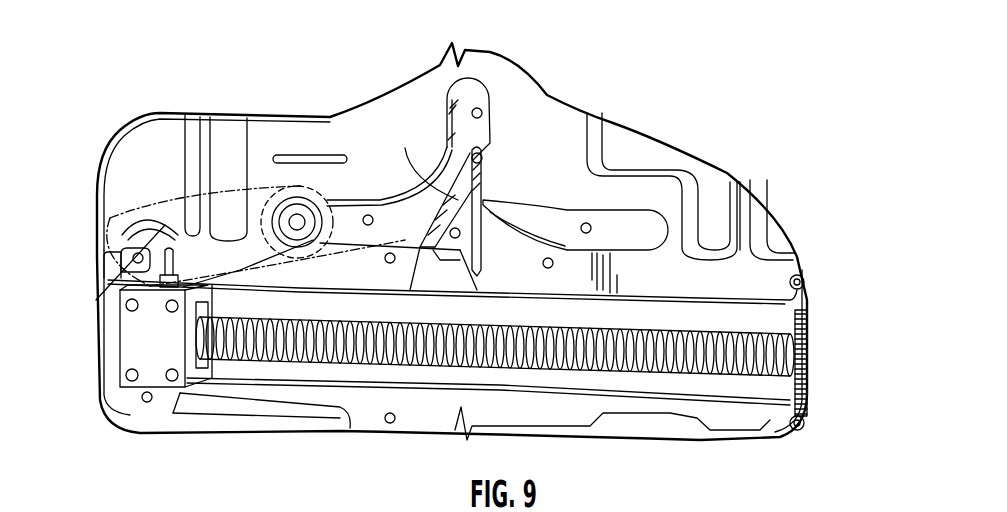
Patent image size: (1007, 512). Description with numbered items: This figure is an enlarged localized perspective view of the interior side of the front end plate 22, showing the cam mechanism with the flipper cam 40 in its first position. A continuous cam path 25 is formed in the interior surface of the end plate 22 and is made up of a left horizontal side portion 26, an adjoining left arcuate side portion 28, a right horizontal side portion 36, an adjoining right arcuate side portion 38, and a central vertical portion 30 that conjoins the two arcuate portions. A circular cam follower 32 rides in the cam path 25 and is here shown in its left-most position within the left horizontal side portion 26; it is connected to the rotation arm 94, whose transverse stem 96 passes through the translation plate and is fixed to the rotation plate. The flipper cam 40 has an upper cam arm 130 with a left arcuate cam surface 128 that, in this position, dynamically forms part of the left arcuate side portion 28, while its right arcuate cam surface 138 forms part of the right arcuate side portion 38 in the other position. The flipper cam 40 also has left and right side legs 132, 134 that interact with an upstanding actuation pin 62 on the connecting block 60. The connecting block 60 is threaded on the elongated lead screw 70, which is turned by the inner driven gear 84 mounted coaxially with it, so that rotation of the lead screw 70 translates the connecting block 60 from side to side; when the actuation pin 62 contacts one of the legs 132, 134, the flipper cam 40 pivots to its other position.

The front end plate 22 is at (760, 200).
The cam path 25 is at (439, 108).
The left horizontal side portion 26 is at (345, 228).
The left arcuate side portion 28 is at (402, 230).
The central vertical portion 30 is at (470, 93).
The cam follower 32 is at (290, 215).
The right horizontal side portion 36 is at (630, 225).
The right arcuate side portion 38 is at (510, 211).
The flipper cam 40 is at (458, 200).
The connecting block 60 is at (140, 330).
The actuation pin 62 is at (165, 280).
The lead screw 70 is at (723, 340).
The inner driven gear 84 is at (812, 380).
The rotation arm 94 is at (157, 200).
The transverse stem 96 is at (125, 252).
The left arcuate cam surface 128 is at (421, 158).
The upper cam arm 130 is at (490, 147).
The left side leg 132 is at (410, 290).
The right side leg 134 is at (480, 290).
The right arcuate cam surface 138 is at (488, 160).